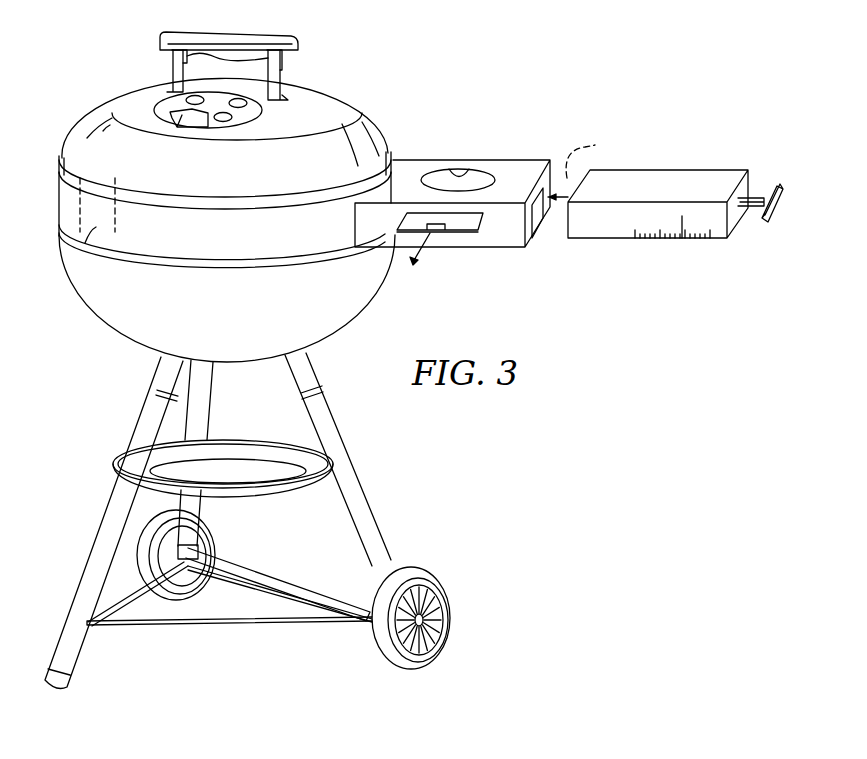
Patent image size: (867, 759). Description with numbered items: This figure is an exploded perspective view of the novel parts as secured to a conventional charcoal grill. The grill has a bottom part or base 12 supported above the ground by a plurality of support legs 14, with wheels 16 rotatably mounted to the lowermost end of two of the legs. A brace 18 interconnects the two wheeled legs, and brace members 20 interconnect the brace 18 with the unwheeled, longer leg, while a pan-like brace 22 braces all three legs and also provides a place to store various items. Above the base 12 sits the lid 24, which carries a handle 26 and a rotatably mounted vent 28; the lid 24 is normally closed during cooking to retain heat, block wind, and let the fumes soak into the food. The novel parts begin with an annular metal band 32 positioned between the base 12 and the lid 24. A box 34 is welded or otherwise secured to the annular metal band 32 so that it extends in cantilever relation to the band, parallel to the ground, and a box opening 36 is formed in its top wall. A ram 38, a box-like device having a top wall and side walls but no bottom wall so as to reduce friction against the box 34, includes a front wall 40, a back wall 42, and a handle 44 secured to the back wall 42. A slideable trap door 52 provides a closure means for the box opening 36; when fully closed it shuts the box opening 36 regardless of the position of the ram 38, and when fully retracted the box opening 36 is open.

The base 12 is at (249, 320).
The support legs 14 is at (112, 507).
The wheels 16 is at (218, 534).
The brace 18 is at (282, 580).
The brace members 20 is at (130, 588).
The pan-like brace 22 is at (250, 437).
The lid 24 is at (208, 179).
The handle 26 is at (258, 35).
The vent 28 is at (163, 110).
The annular metal band 32 is at (90, 240).
The box 34 is at (410, 162).
The box opening 36 is at (463, 172).
The ram 38 is at (647, 183).
The front wall 40 is at (594, 160).
The back wall 42 is at (748, 184).
The handle 44 is at (762, 225).
The slideable trap door 52 is at (468, 222).